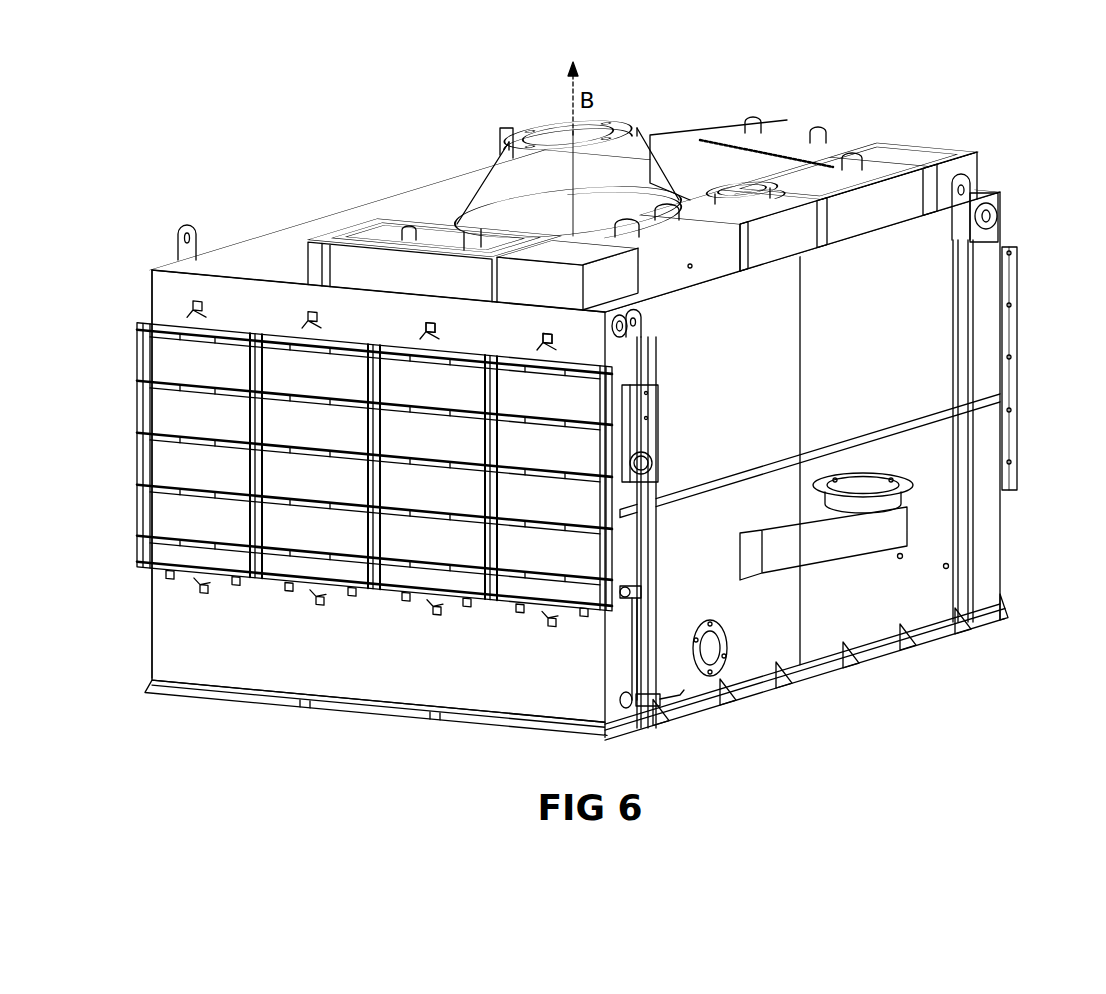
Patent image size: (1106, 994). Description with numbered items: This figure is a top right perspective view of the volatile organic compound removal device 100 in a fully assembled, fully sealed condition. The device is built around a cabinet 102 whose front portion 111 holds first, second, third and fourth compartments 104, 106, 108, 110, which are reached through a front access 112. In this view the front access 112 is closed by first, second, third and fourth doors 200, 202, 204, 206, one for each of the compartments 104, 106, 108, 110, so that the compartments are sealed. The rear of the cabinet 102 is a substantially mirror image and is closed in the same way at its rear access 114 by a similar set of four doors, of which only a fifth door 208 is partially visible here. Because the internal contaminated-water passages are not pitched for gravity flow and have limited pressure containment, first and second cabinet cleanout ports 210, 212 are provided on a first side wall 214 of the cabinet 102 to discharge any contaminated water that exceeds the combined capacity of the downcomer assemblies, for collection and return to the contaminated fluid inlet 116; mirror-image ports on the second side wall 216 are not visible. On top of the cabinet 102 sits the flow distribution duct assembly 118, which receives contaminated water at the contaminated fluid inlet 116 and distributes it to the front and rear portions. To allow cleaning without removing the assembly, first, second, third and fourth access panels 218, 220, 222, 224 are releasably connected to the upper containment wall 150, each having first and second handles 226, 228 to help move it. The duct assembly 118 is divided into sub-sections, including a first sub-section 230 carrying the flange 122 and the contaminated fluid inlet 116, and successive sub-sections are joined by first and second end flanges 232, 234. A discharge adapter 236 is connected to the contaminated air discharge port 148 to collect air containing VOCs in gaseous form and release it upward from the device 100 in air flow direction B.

The volatile organic compound removal device 100 is at (1026, 162).
The cabinet 102 is at (992, 539).
The first compartment 104 is at (177, 240).
The second compartment 106 is at (283, 333).
The third compartment 108 is at (403, 353).
The fourth compartment 110 is at (510, 357).
The front portion 111 is at (693, 703).
The front access 112 is at (131, 451).
The rear access 114 is at (1020, 330).
The contaminated fluid inlet 116 is at (738, 185).
The flow distribution duct assembly 118 is at (943, 140).
The flange 122 is at (827, 193).
The contaminated air discharge port 148 is at (460, 215).
The upper containment wall 150 is at (328, 245).
The first door 200 is at (183, 528).
The second door 202 is at (313, 545).
The third door 204 is at (437, 560).
The fourth door 206 is at (583, 563).
The fifth door 208 is at (1020, 281).
The first cabinet cleanout port 210 is at (653, 343).
The second cabinet cleanout port 212 is at (1000, 218).
The first side wall 214 is at (908, 635).
The second side wall 216 is at (148, 292).
The first access panel 218 is at (428, 230).
The second access panel 220 is at (677, 243).
The third access panel 222 is at (873, 170).
The fourth access panel 224 is at (785, 133).
The first handle 226 is at (752, 118).
The second handle 228 is at (820, 128).
The first sub-section 230 is at (778, 250).
The first end flange 232 is at (772, 248).
The second end flange 234 is at (805, 215).
The discharge adapter 236 is at (512, 187).